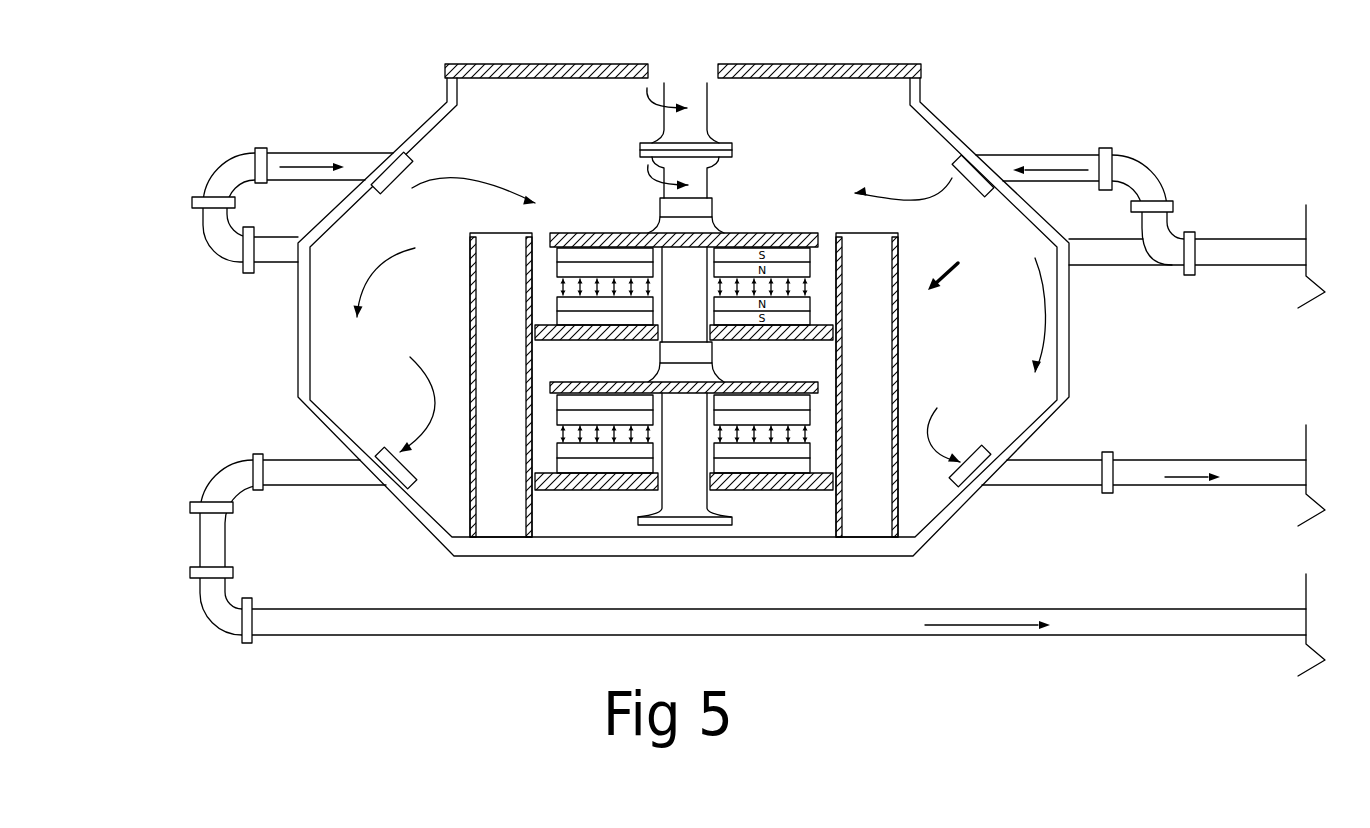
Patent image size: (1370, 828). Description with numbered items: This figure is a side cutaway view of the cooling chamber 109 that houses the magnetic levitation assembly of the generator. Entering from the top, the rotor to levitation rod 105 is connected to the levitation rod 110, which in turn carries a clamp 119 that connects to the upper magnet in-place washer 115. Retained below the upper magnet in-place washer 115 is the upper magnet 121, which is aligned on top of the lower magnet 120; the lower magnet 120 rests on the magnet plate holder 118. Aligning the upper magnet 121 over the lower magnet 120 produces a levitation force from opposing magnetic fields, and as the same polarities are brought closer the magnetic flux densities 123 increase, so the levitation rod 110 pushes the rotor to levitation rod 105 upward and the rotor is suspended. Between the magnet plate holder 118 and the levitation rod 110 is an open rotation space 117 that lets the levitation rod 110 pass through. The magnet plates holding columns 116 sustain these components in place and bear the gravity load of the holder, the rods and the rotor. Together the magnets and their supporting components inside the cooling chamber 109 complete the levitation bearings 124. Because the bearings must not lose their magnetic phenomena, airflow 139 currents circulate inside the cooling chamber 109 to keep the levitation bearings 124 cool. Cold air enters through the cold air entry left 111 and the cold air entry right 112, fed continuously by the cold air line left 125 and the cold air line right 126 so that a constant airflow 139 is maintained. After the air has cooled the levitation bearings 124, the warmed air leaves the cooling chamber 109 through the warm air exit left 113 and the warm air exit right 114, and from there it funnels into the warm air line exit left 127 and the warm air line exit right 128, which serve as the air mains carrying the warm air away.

The rotor to levitation rod 105 is at (708, 112).
The cooling chamber 109 is at (1069, 338).
The levitation rod 110 is at (710, 173).
The cold air entry left 111 is at (415, 168).
The cold air entry right 112 is at (953, 177).
The warm air exit left 113 is at (393, 447).
The warm air exit right 114 is at (958, 450).
The upper magnet in-place washer 115 is at (746, 240).
The magnet plates holding columns 116 is at (898, 368).
The open rotation space 117 is at (660, 490).
The magnet plate holder 118 is at (750, 490).
The clamp 119 is at (654, 378).
The lower magnet 120 is at (553, 452).
The upper magnet 121 is at (550, 258).
The magnetic flux densities 123 is at (808, 436).
The levitation bearings 124 is at (964, 268).
The cold air line left 125 is at (290, 152).
The cold air line right 126 is at (1063, 157).
The warm air line exit left 127 is at (288, 486).
The warm air line exit right 128 is at (1053, 488).
The airflow 139 is at (372, 272).